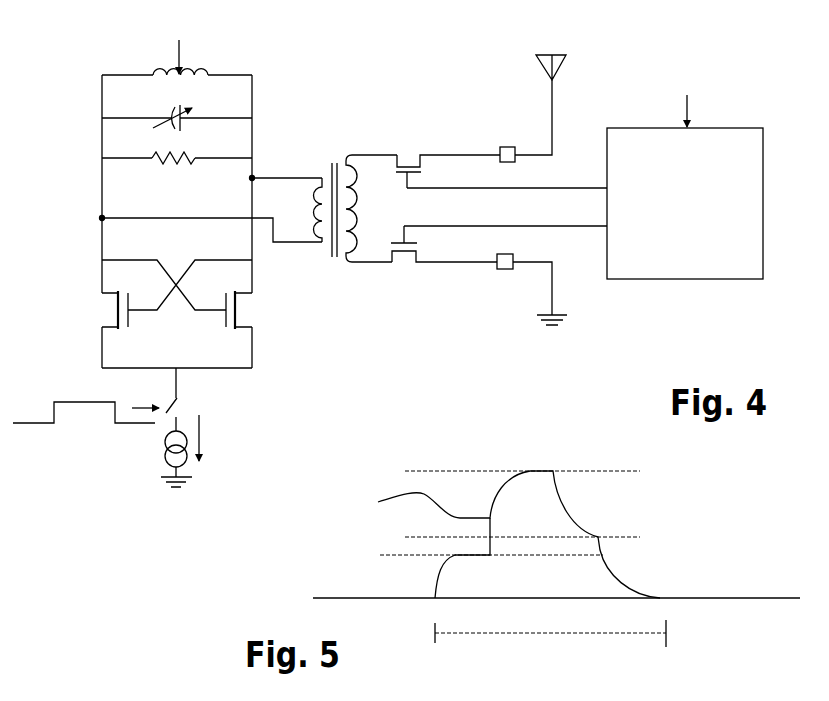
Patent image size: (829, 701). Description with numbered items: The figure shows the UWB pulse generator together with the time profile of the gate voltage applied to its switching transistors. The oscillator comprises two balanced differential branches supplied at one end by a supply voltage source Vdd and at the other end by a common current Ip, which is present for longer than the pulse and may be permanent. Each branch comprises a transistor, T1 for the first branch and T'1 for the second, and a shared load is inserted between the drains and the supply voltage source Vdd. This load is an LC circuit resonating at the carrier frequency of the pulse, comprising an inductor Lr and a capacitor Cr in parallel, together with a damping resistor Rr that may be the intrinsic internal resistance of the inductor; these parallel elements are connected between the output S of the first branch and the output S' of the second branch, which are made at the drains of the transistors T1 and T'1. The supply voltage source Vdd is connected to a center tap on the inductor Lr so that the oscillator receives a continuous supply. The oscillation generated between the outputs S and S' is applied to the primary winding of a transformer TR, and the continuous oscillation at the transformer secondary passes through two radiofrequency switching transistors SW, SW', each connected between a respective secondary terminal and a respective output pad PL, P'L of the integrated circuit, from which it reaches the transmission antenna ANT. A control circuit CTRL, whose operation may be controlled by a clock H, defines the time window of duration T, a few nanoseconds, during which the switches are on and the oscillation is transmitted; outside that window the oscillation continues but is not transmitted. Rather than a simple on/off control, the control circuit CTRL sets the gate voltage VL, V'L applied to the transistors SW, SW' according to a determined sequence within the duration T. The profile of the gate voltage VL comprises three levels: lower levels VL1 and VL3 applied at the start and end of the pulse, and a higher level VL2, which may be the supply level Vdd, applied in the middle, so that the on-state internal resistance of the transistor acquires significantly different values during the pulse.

In FIG. 4, the supply voltage source Vdd is at (187, 48).
In FIG. 4, the inductor Lr is at (180, 85).
In FIG. 4, the capacitor Cr is at (179, 124).
In FIG. 4, the damping resistor Rr is at (173, 168).
In FIG. 4, the output of the first branch S is at (193, 225).
In FIG. 4, the output of the second branch S' is at (286, 168).
In FIG. 4, the transistor T1 is at (99, 310).
In FIG. 4, the transistor T'1 is at (256, 310).
In FIG. 4, the common current Ip is at (203, 451).
In FIG. 4, the transformer TR is at (356, 194).
In FIG. 4, the radiofrequency switching transistor SW is at (446, 158).
In FIG. 4, the radiofrequency switching transistor SW' is at (444, 261).
In FIG. 4, the gate voltage VL is at (507, 180).
In FIG. 5, the gate voltage VL is at (502, 534).
In FIG. 4, the gate voltage V'L is at (505, 213).
In FIG. 4, the output pad PL is at (514, 121).
In FIG. 4, the output pad P'L is at (521, 289).
In FIG. 4, the transmission antenna ANT is at (525, 67).
In FIG. 4, the control circuit CTRL is at (717, 128).
In FIG. 4, the clock H is at (673, 105).
In FIG. 5, the voltage level VL1 is at (467, 553).
In FIG. 5, the voltage level VL2 is at (491, 466).
In FIG. 5, the voltage level VL3 is at (535, 526).
In FIG. 5, the duration of the UWB pulse T is at (550, 629).